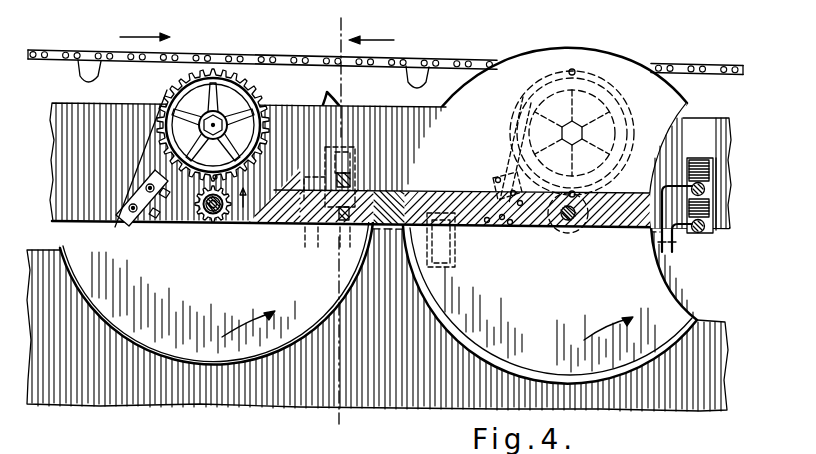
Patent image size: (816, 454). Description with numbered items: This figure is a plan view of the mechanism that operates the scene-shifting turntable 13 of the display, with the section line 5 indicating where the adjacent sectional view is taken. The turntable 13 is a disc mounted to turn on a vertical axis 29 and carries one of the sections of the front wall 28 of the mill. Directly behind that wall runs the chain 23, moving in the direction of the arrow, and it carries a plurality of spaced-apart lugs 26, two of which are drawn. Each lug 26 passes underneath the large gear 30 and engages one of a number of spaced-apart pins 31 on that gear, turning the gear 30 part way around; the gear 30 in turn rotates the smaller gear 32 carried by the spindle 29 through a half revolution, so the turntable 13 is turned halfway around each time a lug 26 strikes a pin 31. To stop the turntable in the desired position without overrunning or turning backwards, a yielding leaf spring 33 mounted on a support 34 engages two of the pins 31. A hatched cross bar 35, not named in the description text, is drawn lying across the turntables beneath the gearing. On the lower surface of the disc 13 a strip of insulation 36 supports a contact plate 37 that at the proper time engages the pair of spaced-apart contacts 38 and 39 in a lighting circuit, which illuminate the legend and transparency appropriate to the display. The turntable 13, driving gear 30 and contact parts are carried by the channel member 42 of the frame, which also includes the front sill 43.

The section line 5- 5 is at (341, 221).
The turntable 13 is at (110, 270).
The chain 23 is at (283, 57).
The lug 26 is at (86, 68).
The front wall 28 is at (386, 234).
The vertical axis 29 is at (206, 205).
The gear 30 is at (263, 96).
The pin 31 is at (216, 70).
The smaller gear 32 is at (205, 217).
The leaf spring 33 is at (166, 91).
The support 34 is at (120, 220).
The cross bar 35 is at (470, 198).
The strip of insulation 36 is at (300, 228).
The contact plate 37 is at (450, 252).
The contact 38 is at (687, 173).
The contact 39 is at (712, 233).
The channel member 42 is at (66, 128).
The front sill 43 is at (205, 392).